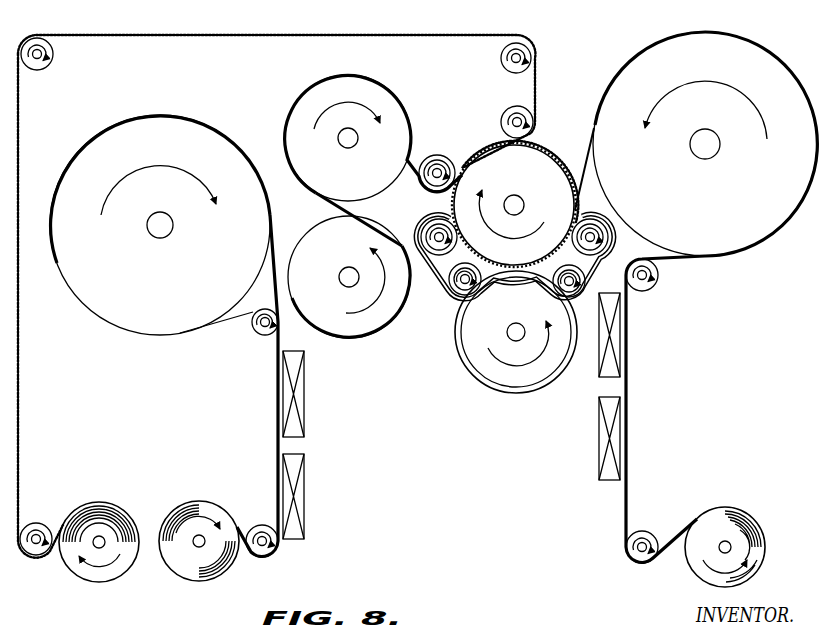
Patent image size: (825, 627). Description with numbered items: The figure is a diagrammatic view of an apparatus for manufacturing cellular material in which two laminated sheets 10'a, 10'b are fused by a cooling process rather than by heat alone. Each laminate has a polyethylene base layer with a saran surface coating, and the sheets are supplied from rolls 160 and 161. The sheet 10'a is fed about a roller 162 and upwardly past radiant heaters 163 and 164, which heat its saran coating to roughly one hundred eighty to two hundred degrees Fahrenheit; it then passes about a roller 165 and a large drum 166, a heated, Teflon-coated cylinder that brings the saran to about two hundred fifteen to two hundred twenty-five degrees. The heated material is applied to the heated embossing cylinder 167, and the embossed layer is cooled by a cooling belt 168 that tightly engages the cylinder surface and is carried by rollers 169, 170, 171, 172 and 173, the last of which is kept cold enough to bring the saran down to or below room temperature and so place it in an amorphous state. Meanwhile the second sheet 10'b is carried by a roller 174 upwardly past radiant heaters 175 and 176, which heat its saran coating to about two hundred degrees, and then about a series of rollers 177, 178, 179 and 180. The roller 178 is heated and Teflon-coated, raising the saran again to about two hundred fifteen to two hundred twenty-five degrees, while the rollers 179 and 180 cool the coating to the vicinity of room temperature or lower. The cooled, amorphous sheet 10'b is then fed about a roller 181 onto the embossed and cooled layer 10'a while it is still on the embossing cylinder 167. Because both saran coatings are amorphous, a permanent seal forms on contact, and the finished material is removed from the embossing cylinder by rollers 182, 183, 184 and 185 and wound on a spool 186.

The laminated sheet 10'a is at (696, 297).
The laminated sheet 10'b is at (298, 296).
The roll 160 is at (738, 511).
The roll 161 is at (210, 490).
The roller 162 is at (652, 534).
The radiant heater 163 is at (599, 445).
The radiant heater 164 is at (600, 380).
The roller 165 is at (658, 277).
The large drum 166 is at (712, 197).
The embossing cylinder 167 is at (520, 189).
The cooling belt 168 is at (583, 263).
The roller 169 is at (601, 232).
The roller 170 is at (437, 254).
The roller 171 is at (560, 288).
The roller 172 is at (461, 291).
The roller 173 is at (513, 383).
The roller 174 is at (264, 526).
The radiant heater 175 is at (304, 496).
The radiant heater 176 is at (304, 395).
The roller 177 is at (259, 336).
The roller 178 is at (160, 275).
The roller 179 is at (352, 265).
The roller 180 is at (352, 177).
The roller 181 is at (440, 154).
The roller 182 is at (508, 110).
The roller 183 is at (500, 63).
The roller 184 is at (43, 64).
The roller 185 is at (42, 520).
The spool 186 is at (98, 503).